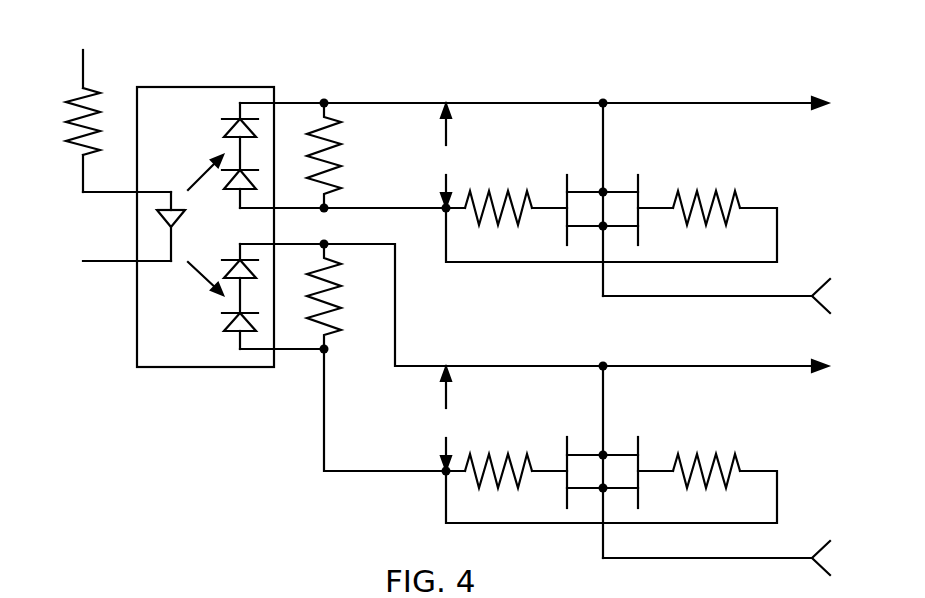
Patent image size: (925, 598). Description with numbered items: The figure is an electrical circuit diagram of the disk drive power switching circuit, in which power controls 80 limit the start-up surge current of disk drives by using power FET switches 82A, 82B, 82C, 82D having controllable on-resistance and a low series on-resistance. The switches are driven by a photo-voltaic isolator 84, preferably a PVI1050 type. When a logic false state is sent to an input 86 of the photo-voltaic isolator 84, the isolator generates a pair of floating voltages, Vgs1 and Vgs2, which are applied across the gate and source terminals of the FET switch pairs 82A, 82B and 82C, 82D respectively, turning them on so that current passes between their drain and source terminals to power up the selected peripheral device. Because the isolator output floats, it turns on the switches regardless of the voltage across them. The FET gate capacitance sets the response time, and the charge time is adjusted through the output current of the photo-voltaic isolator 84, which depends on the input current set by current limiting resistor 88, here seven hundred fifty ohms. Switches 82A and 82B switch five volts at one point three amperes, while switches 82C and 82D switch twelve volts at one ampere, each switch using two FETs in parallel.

The power controls 80 is at (207, 472).
The power FET switch 82A is at (567, 175).
The power FET switch 82B is at (638, 175).
The power FET switch 82C is at (567, 437).
The power FET switch 82D is at (638, 437).
The photo-voltaic isolator 84 is at (152, 367).
The input 86 is at (136, 275).
The current limiting resistor 88 is at (65, 140).